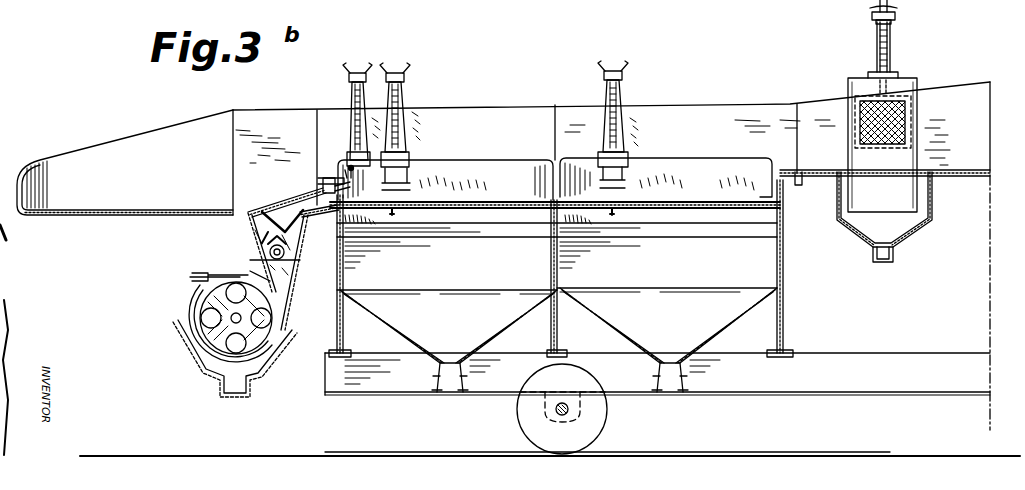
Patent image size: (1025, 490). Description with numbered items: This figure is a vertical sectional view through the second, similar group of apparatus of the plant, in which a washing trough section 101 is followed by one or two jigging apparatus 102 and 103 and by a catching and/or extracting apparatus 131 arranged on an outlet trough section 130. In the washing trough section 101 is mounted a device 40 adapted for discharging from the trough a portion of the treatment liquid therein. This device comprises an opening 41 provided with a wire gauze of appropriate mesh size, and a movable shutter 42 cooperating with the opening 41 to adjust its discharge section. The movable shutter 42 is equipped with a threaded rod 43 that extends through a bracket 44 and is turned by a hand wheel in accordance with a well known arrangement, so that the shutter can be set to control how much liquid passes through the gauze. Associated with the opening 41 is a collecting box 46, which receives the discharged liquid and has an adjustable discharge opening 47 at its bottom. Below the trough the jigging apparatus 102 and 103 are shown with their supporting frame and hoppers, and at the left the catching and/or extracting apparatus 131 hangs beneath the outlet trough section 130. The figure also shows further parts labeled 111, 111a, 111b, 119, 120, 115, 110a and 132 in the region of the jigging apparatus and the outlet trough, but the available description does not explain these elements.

The outlet trough section 130 is at (267, 122).
The washing trough section 101 is at (950, 92).
The chute / discharge connection 132 is at (291, 190).
The catching and/or extracting apparatus 131 is at (239, 237).
The trough 119 is at (410, 180).
The nozzle spindle 111b is at (352, 96).
The nozzle fitting 111a is at (351, 165).
The nozzle connection 111 is at (340, 172).
The adjustable nozzle valve 120 is at (406, 104).
The rail / supporting member 115 is at (395, 208).
The collecting bin 110a is at (345, 257).
The jigging apparatus 102 is at (785, 276).
The jigging apparatus 103 is at (372, 320).
The liquid discharging device 40 is at (846, 73).
The opening 41 is at (862, 118).
The movable shutter 42 is at (916, 76).
The threaded rod 43 is at (892, 43).
The bracket 44 is at (876, 20).
The collecting box 46 is at (930, 225).
The adjustable discharge opening 47 is at (895, 258).